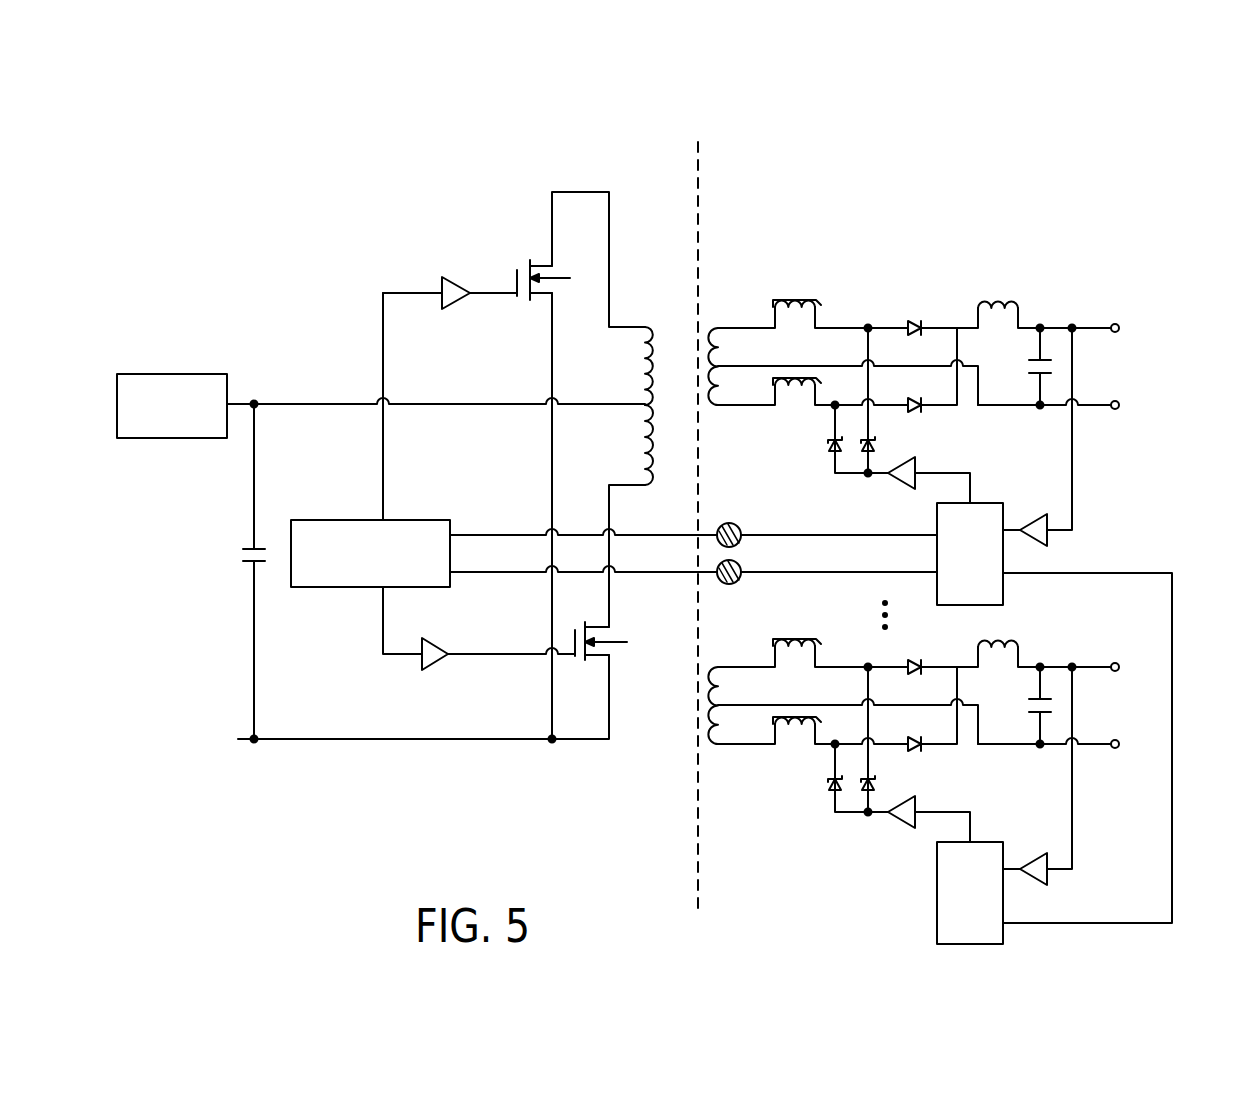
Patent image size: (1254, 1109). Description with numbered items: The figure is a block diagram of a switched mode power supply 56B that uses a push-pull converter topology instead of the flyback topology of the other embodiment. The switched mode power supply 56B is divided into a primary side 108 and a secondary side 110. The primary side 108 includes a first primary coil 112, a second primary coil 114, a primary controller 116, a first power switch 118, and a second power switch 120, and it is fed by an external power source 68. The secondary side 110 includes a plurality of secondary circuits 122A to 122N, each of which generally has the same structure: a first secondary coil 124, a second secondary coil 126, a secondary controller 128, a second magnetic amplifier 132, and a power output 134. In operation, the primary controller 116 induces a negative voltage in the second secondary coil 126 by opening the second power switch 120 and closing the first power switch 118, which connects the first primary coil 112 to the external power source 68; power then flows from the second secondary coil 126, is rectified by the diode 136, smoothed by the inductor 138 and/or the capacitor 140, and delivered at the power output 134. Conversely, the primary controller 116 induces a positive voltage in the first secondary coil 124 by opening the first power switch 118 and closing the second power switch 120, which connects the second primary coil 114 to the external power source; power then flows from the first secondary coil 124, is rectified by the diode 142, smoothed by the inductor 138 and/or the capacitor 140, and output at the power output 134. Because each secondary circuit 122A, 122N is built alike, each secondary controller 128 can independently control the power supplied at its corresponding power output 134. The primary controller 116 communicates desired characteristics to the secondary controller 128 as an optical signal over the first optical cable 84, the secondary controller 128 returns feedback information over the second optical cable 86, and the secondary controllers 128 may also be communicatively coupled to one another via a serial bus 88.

The switched mode power supply 56B is at (473, 195).
The external power source 68 is at (197, 374).
The first optical cable 84 is at (770, 535).
The second optical cable 86 is at (770, 572).
The serial bus 88 is at (1085, 923).
The primary side 108 is at (440, 245).
The secondary side 110 is at (1058, 184).
The first primary coil 112 is at (646, 326).
The second primary coil 114 is at (641, 433).
The primary controller 116 is at (361, 520).
The first power switch 118 is at (528, 265).
The second power switch 120 is at (582, 659).
The secondary circuit 122A is at (765, 152).
The secondary circuit 122N is at (790, 856).
The first secondary coil 124 is at (728, 327).
The second secondary coil 126 is at (722, 378).
The secondary controller 128 is at (985, 503).
The second magnetic amplifier 132 is at (797, 394).
The power output 134 is at (1128, 358).
The diode 136 is at (921, 409).
The inductor 138 is at (797, 304).
The capacitor 140 is at (1036, 359).
The diode 142 is at (916, 322).